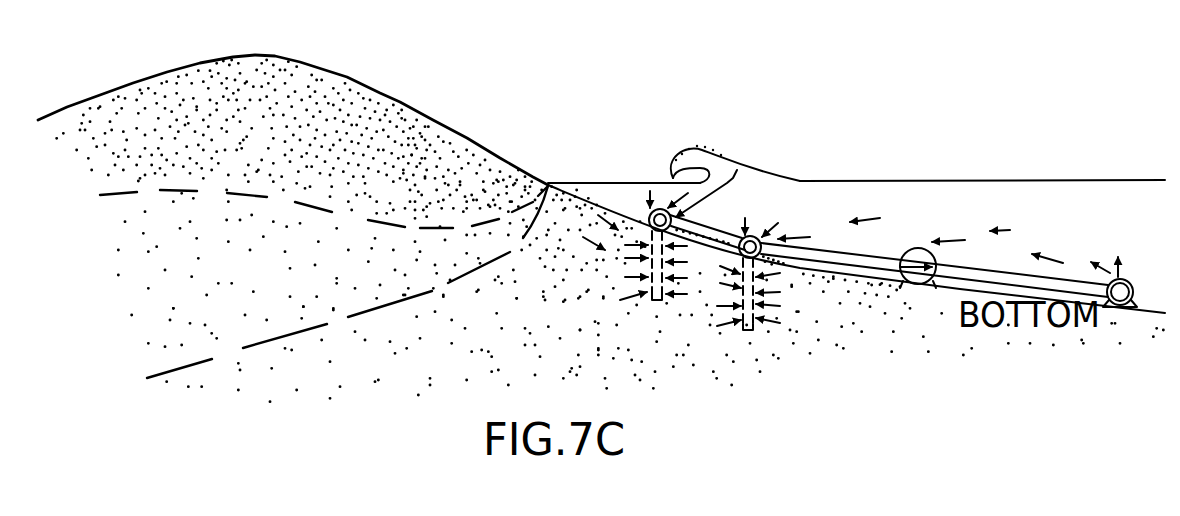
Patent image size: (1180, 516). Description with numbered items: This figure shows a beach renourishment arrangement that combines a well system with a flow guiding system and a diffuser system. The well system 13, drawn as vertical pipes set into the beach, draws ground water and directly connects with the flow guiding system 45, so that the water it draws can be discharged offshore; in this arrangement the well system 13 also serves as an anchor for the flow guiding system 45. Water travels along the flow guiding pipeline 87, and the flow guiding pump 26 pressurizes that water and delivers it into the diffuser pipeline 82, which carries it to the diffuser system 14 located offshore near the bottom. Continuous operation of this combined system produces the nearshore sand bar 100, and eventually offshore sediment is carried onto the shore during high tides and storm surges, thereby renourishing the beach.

The nearshore sand bar 100 is at (660, 198).
The flow guiding system 45 is at (740, 200).
The flow guiding pipeline 87 is at (966, 209).
The flow guiding pump 26 is at (903, 213).
The diffuser pipeline 82 is at (934, 219).
The diffuser system 14 is at (1136, 292).
The well system 13 is at (665, 312).